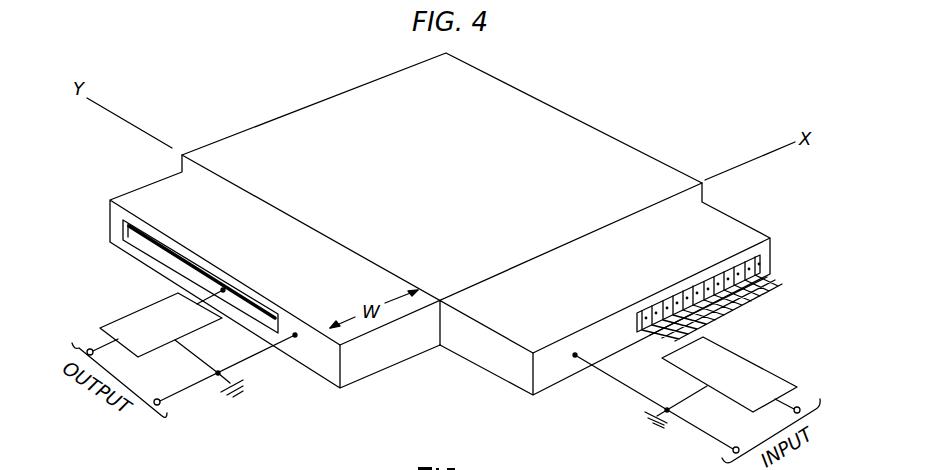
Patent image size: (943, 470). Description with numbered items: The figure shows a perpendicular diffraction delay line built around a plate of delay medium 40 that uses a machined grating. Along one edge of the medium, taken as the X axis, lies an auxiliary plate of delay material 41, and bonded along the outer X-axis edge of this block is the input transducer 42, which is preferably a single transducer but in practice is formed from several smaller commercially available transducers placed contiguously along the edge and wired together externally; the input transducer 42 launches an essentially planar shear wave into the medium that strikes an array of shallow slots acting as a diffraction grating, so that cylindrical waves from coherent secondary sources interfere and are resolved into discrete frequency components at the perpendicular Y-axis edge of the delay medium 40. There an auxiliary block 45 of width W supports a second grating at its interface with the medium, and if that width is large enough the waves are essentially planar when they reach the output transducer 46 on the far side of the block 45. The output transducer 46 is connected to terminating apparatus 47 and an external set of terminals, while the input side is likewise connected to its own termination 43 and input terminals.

The delay medium 40 is at (598, 133).
The auxiliary plate of delay material 41 is at (733, 229).
The input transducer 42 is at (763, 259).
The input termination 43 is at (760, 367).
The auxiliary block 45 is at (380, 357).
The output transducer 46 is at (130, 232).
The terminating apparatus 47 is at (157, 300).